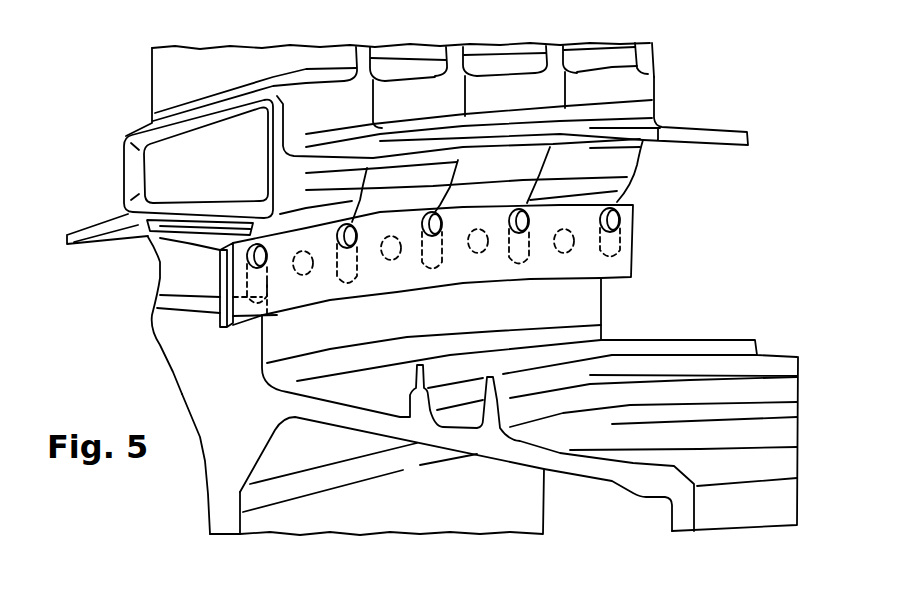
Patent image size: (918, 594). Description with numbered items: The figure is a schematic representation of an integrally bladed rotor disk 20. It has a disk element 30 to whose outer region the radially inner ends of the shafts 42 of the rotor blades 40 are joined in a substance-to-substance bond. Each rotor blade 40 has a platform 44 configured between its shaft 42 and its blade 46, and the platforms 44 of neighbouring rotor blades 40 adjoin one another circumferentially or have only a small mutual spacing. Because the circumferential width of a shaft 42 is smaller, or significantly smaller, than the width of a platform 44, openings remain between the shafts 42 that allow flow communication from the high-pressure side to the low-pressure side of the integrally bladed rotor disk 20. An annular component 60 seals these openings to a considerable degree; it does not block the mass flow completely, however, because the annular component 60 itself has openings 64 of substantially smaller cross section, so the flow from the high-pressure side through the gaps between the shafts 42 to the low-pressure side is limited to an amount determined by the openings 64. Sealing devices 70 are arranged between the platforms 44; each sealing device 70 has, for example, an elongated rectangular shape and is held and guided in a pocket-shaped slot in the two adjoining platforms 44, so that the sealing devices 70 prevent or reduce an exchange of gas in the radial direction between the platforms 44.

The integrally bladed rotor disk 20 is at (714, 96).
The disk element 30 is at (237, 457).
The rotor blade 40 is at (655, 53).
The shaft 42 is at (185, 278).
The platform 44 is at (180, 157).
The blade 46 is at (195, 70).
The annular component 60 is at (613, 245).
The opening 64 is at (245, 262).
The sealing device 70 is at (185, 273).